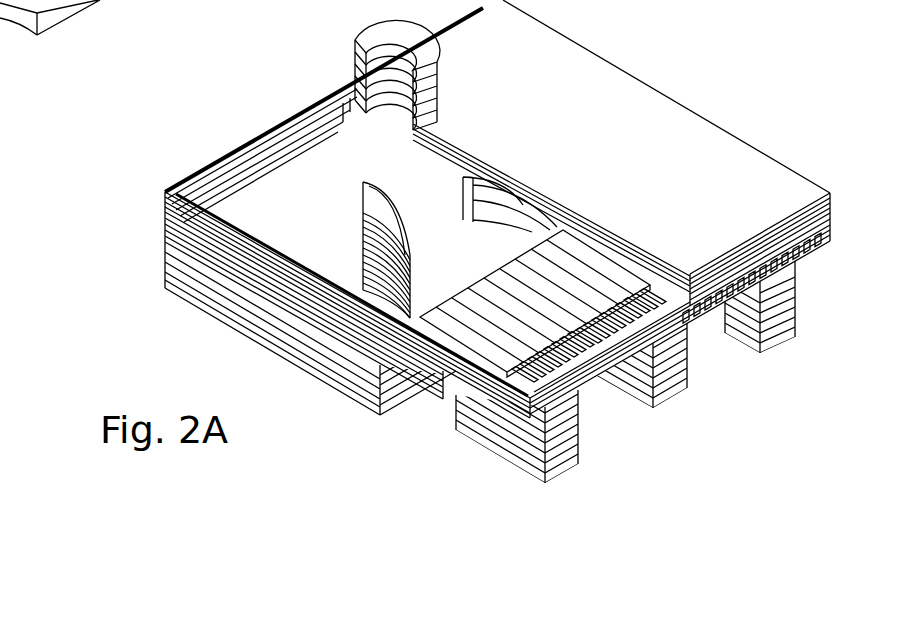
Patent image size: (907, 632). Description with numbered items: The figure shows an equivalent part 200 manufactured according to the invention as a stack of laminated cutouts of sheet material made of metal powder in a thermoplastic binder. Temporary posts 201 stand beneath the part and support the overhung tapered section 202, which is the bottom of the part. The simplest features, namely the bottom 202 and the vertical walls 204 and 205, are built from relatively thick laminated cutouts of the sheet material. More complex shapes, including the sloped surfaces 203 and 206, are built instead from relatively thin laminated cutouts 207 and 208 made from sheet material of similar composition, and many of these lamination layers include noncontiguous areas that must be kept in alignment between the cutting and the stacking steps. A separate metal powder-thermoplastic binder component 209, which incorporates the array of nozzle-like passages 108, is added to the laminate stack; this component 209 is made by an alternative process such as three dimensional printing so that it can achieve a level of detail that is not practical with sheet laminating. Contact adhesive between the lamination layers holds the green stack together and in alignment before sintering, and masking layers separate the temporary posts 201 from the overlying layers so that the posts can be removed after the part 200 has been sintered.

The array of nozzle-like passages 108 is at (735, 287).
The equivalent part 200 is at (667, 72).
The temporary posts 201 is at (513, 440).
The overhung tapered section / bottom 202 is at (165, 287).
The sloped surface 203 is at (443, 390).
The vertical wall 204 is at (162, 260).
The vertical wall 205 is at (356, 66).
The sloped surface 206 is at (330, 100).
The thin laminated cutouts 207 is at (163, 212).
The thin laminated cutouts 208 is at (357, 44).
The metal powder-thermoplastic binder component 209 is at (653, 340).